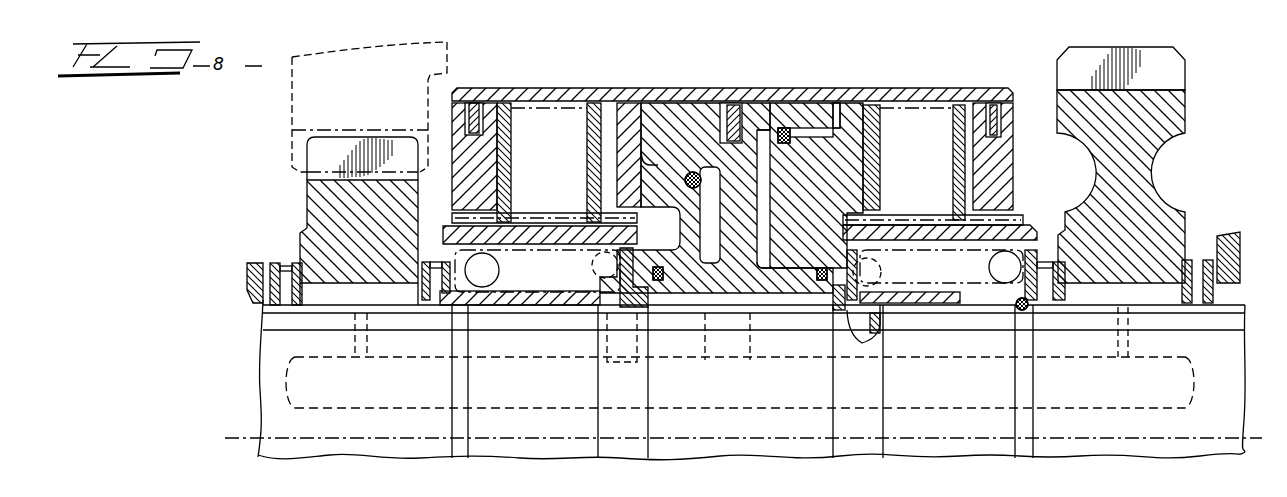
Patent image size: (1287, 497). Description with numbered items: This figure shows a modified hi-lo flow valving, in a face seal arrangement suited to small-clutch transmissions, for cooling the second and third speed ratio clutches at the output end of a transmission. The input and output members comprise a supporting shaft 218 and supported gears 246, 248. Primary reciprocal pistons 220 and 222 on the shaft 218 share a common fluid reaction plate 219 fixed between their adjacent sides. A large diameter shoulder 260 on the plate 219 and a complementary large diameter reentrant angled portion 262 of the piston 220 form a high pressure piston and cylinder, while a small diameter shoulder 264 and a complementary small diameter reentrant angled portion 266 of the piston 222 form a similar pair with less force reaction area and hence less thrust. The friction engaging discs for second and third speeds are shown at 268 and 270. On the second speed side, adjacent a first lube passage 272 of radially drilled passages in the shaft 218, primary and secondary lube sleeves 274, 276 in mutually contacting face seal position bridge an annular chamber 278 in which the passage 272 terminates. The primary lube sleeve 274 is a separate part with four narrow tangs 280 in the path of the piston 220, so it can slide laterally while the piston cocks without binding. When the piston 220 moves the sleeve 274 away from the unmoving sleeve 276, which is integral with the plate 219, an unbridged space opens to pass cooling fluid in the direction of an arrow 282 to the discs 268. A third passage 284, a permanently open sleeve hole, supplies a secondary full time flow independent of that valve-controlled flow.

The supporting shaft 218 is at (948, 418).
The fluid reaction plate 219 is at (755, 112).
The primary reciprocal piston 220 is at (840, 162).
The primary reciprocal piston 222 is at (662, 180).
The supported gear 246 is at (1143, 227).
The supported gear 248 is at (387, 268).
The large diameter shoulder 260 is at (800, 128).
The large diameter reentrant angled portion 262 is at (832, 118).
The small diameter shoulder 264 is at (688, 172).
The small diameter reentrant angled portion 266 is at (655, 166).
The friction engaging discs 268 is at (957, 112).
The friction engaging discs 270 is at (590, 118).
The first lube passage 272 is at (863, 327).
The primary lube sleeve 274 is at (930, 295).
The secondary lube sleeve 276 is at (795, 277).
The annular chamber 278 is at (833, 310).
The tangs 280 is at (850, 262).
The arrow 282 is at (877, 259).
The third passage 284 is at (873, 298).